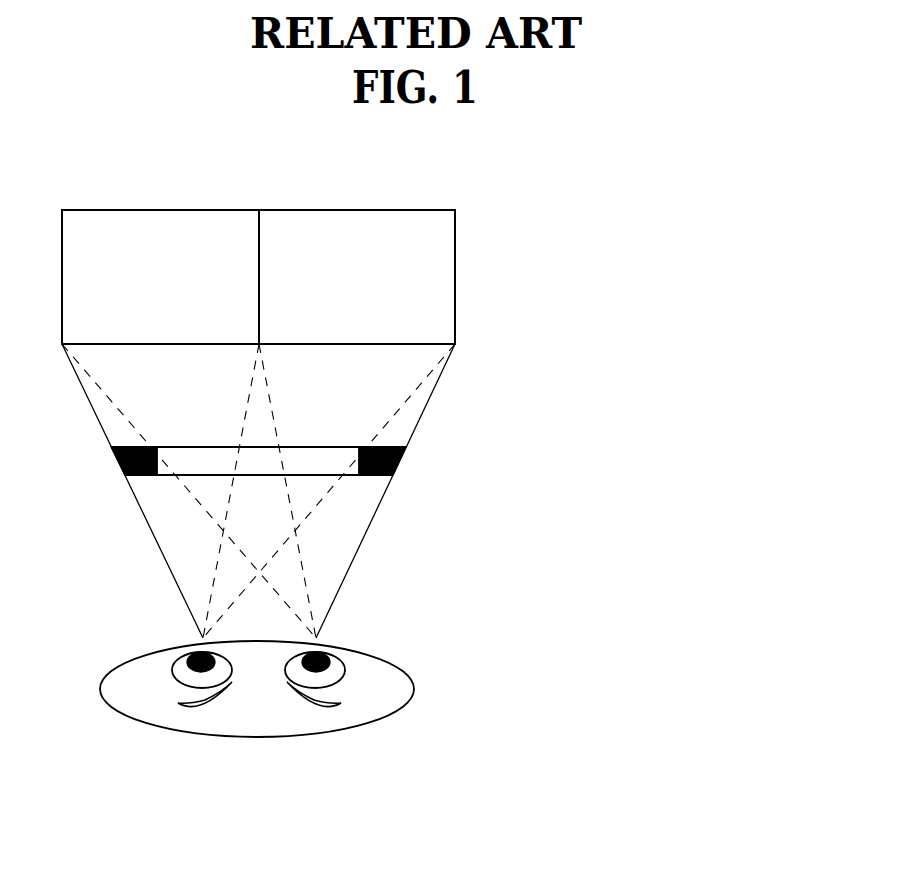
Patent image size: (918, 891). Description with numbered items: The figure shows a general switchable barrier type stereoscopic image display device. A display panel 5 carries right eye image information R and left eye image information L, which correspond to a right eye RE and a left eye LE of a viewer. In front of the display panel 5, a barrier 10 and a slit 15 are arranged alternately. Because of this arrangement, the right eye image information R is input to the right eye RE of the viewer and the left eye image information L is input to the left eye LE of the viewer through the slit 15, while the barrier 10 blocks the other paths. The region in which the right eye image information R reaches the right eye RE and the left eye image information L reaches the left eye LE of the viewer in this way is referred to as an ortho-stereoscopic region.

The display panel 5 is at (428, 280).
The barrier 10 is at (406, 451).
The slit 15 is at (316, 462).
The left eye LE is at (202, 683).
The right eye RE is at (316, 683).
The element viewer is at (397, 692).